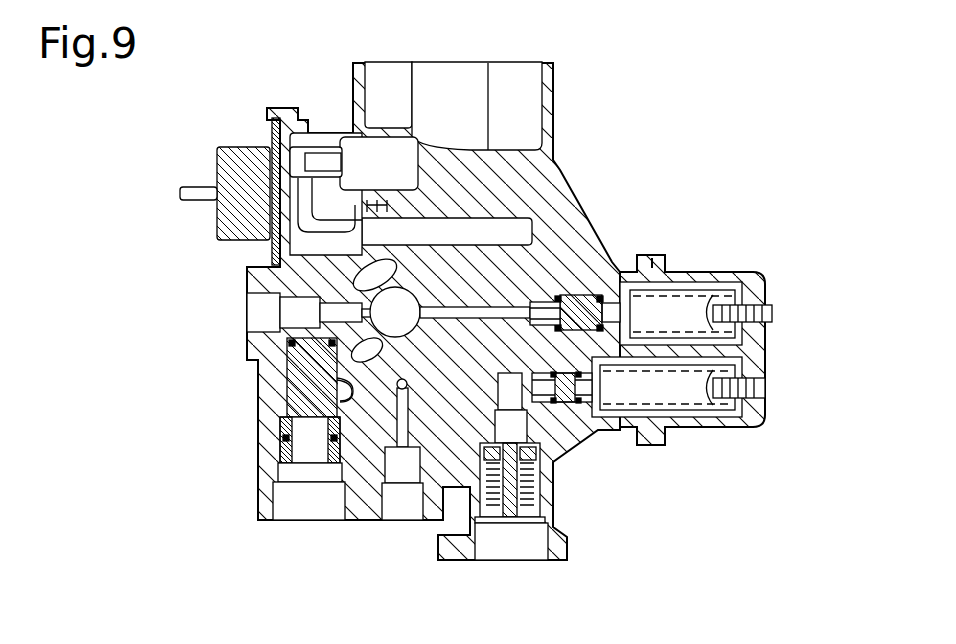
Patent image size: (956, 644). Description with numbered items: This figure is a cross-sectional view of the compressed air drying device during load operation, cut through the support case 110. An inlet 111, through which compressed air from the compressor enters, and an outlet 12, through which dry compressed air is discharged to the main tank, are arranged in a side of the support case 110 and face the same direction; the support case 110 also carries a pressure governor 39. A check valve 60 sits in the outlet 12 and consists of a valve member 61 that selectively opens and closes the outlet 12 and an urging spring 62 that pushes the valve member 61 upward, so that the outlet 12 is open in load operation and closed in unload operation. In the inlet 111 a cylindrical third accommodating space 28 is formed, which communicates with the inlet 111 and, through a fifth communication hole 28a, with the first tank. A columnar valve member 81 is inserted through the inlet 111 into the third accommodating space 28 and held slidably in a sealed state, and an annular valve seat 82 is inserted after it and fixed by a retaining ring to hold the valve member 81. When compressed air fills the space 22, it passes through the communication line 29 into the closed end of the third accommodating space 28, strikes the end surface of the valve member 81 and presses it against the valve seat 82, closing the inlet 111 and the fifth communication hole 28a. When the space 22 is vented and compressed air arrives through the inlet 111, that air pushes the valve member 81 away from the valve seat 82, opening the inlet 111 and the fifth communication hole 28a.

The support case 110 is at (590, 202).
The pressure governor 39 is at (763, 238).
The space 22 is at (382, 324).
The communication line 29 is at (455, 314).
The third accommodating space 28 is at (302, 400).
The valve member 81 is at (288, 395).
The valve seat 82 is at (283, 422).
The fifth communication hole 28a is at (345, 405).
The valve member 61 is at (520, 432).
The urging spring 62 is at (532, 477).
The check valve 60 is at (562, 449).
The inlet 111 is at (308, 522).
The outlet 12 is at (512, 562).